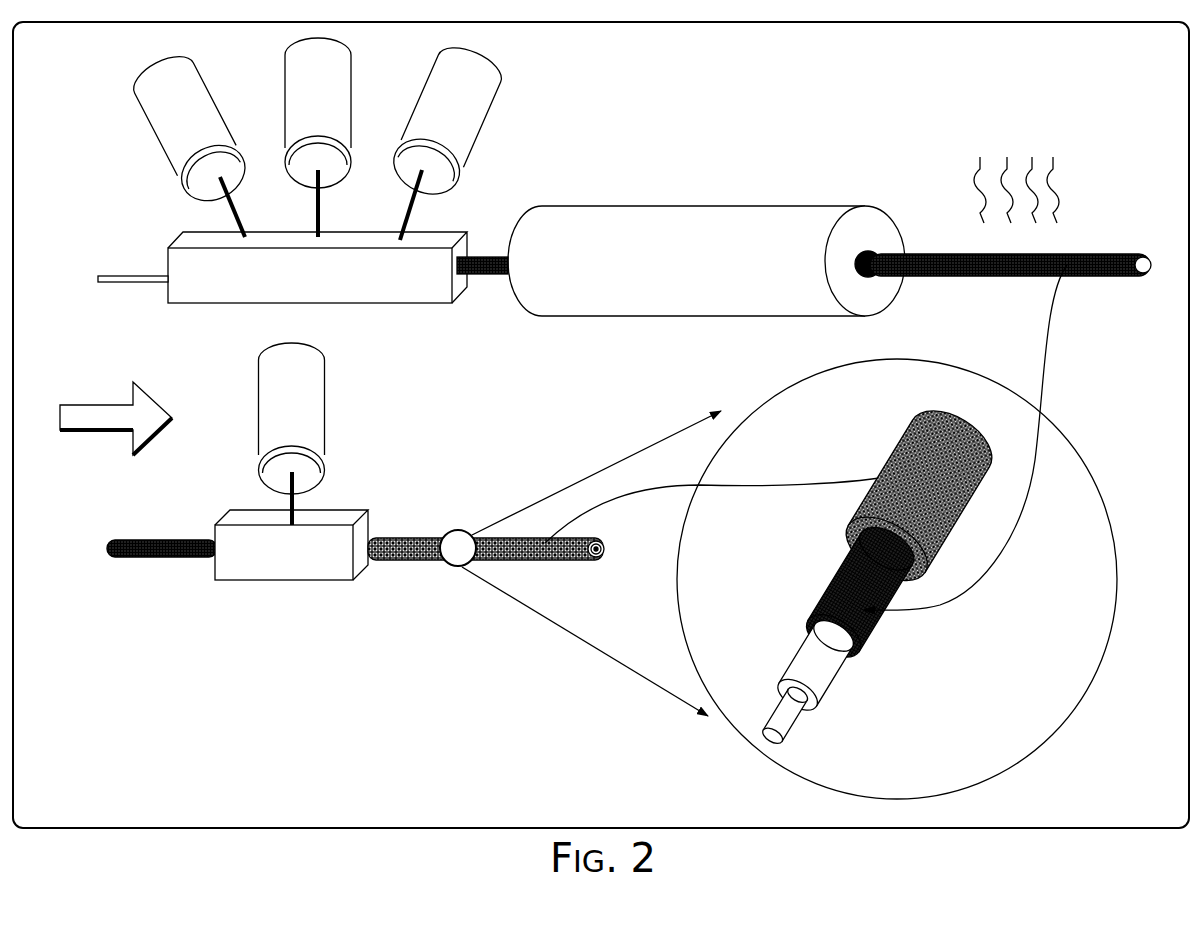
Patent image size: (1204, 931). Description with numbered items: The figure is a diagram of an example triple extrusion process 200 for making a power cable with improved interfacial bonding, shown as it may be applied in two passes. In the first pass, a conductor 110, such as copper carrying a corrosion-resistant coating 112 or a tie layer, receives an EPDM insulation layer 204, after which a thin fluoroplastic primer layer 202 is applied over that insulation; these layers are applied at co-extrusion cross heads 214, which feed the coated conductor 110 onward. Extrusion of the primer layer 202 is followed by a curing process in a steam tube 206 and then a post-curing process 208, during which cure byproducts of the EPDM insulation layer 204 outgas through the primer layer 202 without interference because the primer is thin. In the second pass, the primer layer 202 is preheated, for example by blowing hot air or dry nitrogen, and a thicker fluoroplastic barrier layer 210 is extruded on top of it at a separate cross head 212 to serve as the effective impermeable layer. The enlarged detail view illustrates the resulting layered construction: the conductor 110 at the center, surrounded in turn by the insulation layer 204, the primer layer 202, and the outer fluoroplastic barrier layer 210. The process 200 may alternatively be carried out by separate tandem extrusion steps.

The conductor 110 is at (126, 285).
The corrosion-resistant coating 112 is at (170, 119).
The triple extrusion process 200 is at (584, 49).
The primer layer 202 is at (438, 97).
The insulation layer 204 is at (299, 95).
The steam tube 206 is at (692, 221).
The post-curing process 208 is at (963, 141).
The fluoroplastic barrier layer 210 is at (271, 393).
The cross head 212 is at (226, 514).
The co-extrusion cross heads 214 is at (229, 286).